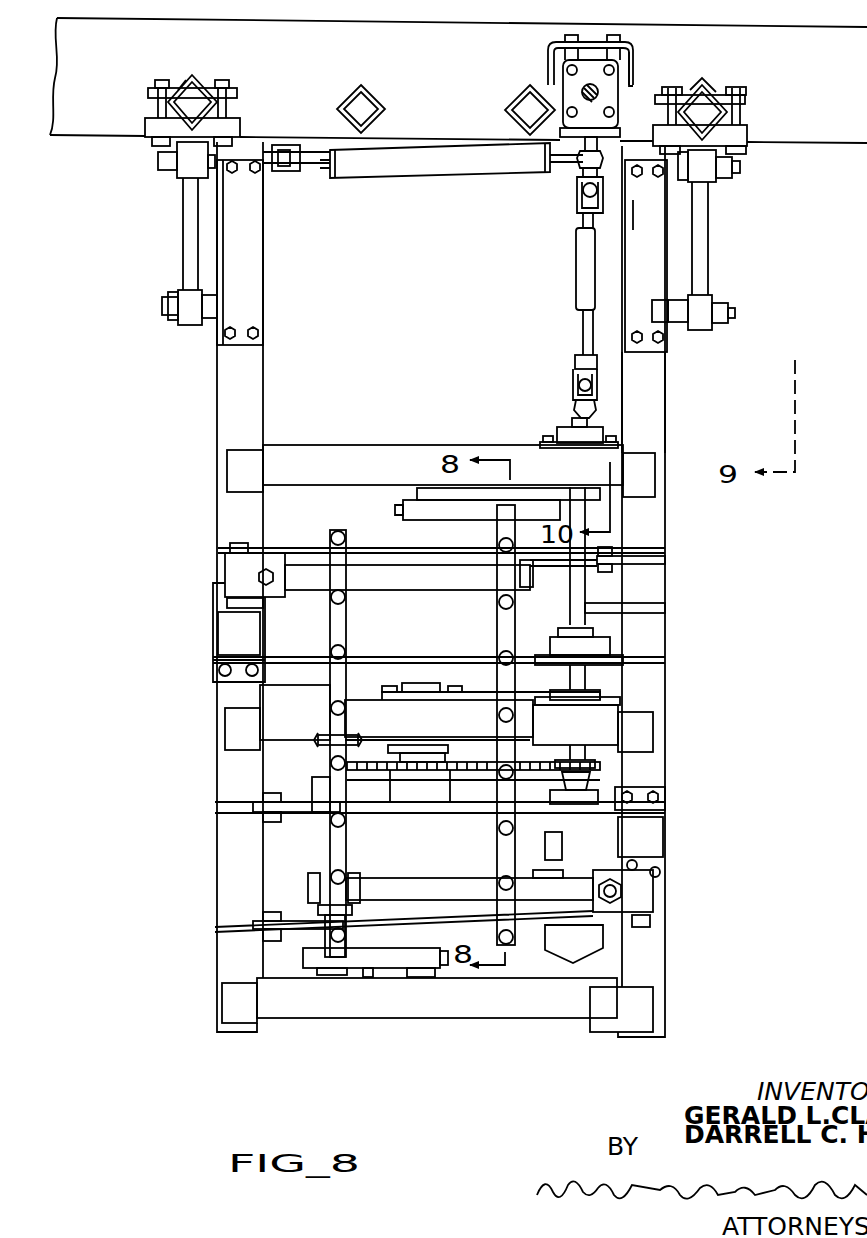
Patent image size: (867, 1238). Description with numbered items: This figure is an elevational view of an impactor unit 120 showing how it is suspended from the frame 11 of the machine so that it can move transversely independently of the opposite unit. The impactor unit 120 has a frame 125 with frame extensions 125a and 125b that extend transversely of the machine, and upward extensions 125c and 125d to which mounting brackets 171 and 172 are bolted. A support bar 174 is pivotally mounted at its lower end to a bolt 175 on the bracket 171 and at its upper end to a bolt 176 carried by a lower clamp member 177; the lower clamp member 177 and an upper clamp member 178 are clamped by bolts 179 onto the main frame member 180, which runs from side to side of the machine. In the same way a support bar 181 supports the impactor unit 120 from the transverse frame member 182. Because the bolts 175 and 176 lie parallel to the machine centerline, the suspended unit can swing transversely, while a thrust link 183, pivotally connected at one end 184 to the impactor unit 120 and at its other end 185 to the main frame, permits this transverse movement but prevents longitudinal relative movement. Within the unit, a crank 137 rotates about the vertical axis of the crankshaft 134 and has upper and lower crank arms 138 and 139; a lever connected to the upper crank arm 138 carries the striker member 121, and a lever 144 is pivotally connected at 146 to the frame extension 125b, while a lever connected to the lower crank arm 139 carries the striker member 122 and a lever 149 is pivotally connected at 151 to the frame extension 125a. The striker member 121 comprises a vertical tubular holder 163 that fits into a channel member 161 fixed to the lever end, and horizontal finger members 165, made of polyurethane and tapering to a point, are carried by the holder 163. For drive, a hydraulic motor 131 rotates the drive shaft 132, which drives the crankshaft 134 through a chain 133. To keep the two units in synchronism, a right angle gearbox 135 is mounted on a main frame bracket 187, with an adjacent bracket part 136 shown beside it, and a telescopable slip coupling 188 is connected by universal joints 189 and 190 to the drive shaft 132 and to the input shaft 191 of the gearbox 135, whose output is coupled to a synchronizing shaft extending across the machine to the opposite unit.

The frame 11 is at (103, 140).
The impactor unit 120 is at (170, 748).
The striker member 121 is at (492, 708).
The striker member 122 is at (350, 719).
The frame 125 is at (672, 676).
The frame extension 125a is at (665, 840).
The frame extension 125b is at (213, 636).
The upward extension 125c is at (656, 416).
The upward extension 125d is at (242, 409).
The hydraulic motor 131 is at (600, 965).
The drive shaft 132 is at (590, 607).
The chain 133 is at (545, 762).
The crankshaft 134 is at (445, 768).
The right angle gearbox 135 is at (558, 92).
The bracket leg 136 is at (630, 85).
The crank 137 is at (395, 509).
The upper crank arm 138 is at (465, 522).
The lower crank arm 139 is at (385, 970).
The lever 144 is at (412, 592).
The pivot connection 146 is at (240, 545).
The lever 149 is at (422, 878).
The pivot connection 151 is at (652, 925).
The channel member 161 is at (518, 632).
The tubular holder 163 is at (493, 862).
The finger members 165 is at (346, 650).
The mounting bracket 171 is at (666, 267).
The mounting bracket 172 is at (258, 251).
The support bar 174 is at (708, 251).
The bolt 175 is at (654, 325).
The bolt 176 is at (732, 170).
The lower clamp member 177 is at (748, 137).
The upper clamp member 178 is at (710, 90).
The bolts 179 is at (738, 116).
The main frame member 180 is at (700, 95).
The support bar 181 is at (182, 242).
The transverse frame member 182 is at (187, 82).
The thrust link 183 is at (470, 177).
The pivot end 184 is at (298, 170).
The pivot end 185 is at (610, 173).
The main frame bracket 187 is at (548, 55).
The telescopable slip coupling 188 is at (576, 290).
The universal joint 189 is at (573, 376).
The universal joint 190 is at (577, 207).
The input shaft 191 is at (580, 160).